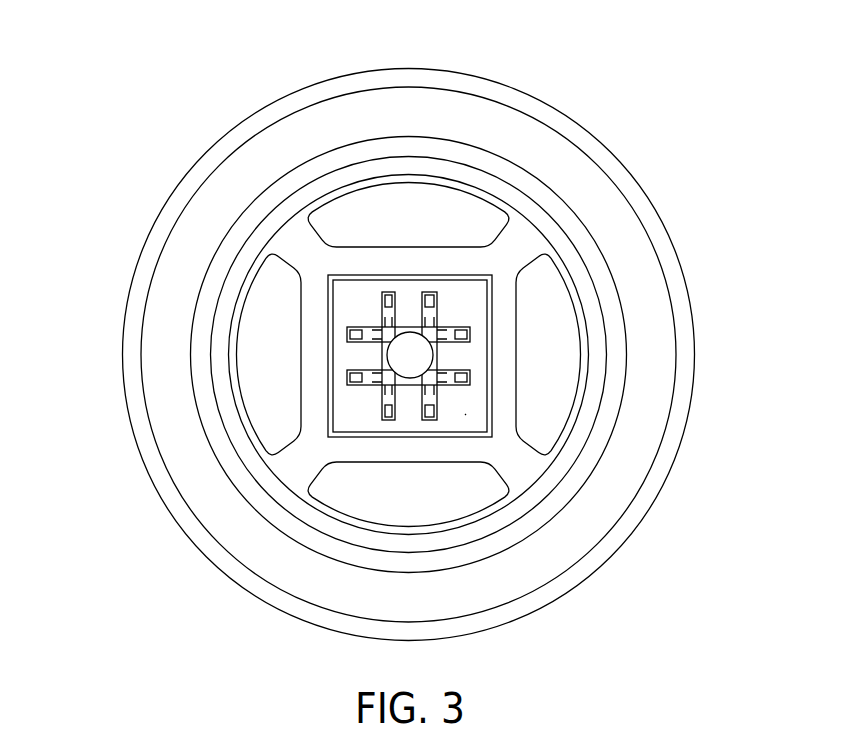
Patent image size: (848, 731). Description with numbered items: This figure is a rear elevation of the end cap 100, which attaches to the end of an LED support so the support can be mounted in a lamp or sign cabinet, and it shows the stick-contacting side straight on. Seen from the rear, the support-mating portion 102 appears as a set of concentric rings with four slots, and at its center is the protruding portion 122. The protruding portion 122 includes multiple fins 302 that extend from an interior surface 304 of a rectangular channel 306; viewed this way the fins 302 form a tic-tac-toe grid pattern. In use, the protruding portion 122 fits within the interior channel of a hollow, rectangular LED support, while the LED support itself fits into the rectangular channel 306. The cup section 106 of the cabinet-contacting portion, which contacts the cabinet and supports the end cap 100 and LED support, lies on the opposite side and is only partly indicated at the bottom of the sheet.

The end cap 100 is at (712, 60).
The support-mating portion 102 is at (653, 143).
The protruding portion 122 is at (452, 327).
The fins 302 is at (362, 342).
The interior surface 304 is at (372, 304).
The rectangular channel 306 is at (465, 415).
The cup section 106 is at (138, 728).